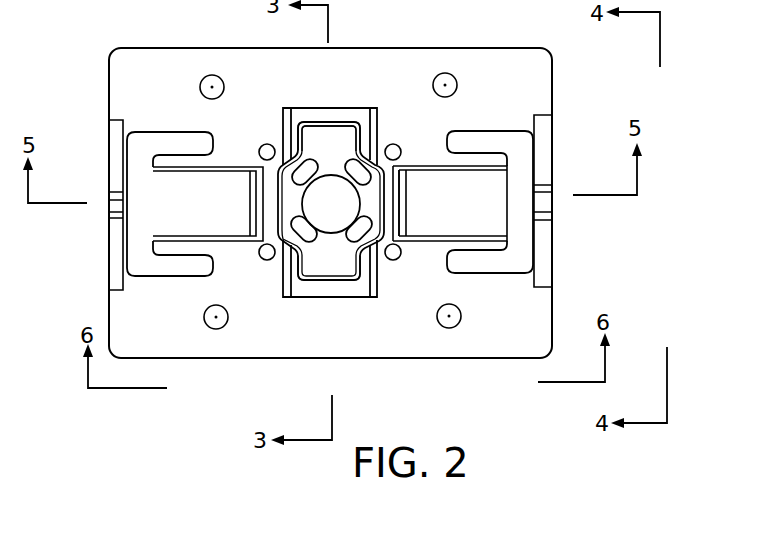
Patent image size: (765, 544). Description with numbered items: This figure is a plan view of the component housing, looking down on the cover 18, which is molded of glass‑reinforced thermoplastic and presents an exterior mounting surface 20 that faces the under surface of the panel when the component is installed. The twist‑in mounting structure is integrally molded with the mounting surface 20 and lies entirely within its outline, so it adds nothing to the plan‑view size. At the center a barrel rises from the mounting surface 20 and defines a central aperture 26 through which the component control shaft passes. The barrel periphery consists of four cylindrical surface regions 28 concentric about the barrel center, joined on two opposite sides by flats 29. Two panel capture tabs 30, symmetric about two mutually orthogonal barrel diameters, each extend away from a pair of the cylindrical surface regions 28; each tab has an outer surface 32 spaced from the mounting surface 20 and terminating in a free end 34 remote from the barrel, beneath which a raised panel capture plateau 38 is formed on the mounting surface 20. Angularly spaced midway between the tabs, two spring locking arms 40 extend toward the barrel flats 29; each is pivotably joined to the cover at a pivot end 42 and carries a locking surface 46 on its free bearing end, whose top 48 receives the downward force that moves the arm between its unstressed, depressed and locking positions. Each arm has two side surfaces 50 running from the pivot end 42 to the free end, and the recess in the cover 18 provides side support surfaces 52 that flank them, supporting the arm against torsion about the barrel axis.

The cover 18 is at (467, 34).
The mounting surface 20 is at (505, 347).
The central aperture 26 is at (380, 158).
The surface regions 28 is at (278, 165).
The flats 29 is at (253, 207).
The panel capture tabs 30 is at (348, 268).
The outer surface 32 is at (310, 153).
The free end 34 is at (330, 122).
The panel capture plateau 38 is at (313, 113).
The spring locking arms 40 is at (203, 227).
The pivot end 42 is at (503, 195).
The locking surface 46 is at (418, 236).
The top 48 is at (403, 168).
The side surfaces 50 is at (462, 158).
The side support surfaces 52 is at (428, 178).